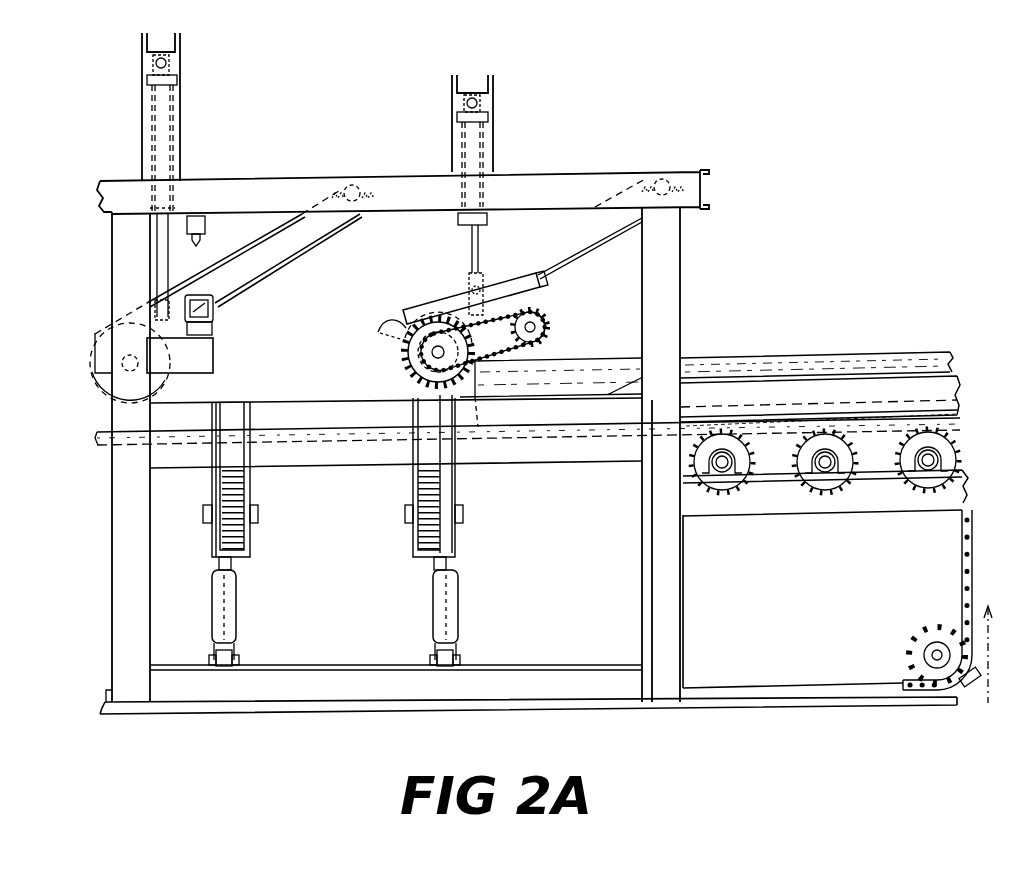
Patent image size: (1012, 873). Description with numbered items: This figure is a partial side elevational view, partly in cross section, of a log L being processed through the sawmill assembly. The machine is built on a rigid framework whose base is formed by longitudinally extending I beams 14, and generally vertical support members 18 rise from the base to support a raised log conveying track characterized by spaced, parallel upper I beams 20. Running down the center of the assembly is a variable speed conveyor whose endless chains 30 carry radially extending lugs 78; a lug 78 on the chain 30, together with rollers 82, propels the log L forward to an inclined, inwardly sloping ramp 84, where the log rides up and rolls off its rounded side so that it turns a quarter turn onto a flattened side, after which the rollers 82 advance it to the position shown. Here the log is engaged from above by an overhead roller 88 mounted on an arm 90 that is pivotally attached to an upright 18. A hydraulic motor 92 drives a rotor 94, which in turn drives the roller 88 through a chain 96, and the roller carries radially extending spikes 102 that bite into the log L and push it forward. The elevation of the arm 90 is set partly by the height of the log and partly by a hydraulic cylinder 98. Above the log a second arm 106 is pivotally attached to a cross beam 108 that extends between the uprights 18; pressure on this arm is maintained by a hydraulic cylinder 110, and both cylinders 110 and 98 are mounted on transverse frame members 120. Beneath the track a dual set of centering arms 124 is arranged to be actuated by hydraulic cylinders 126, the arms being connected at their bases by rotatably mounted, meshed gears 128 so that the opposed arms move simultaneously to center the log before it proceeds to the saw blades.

The longitudinally extending I beam 14 is at (535, 680).
The vertical support member 18 is at (112, 570).
The upper I beam 20 is at (953, 397).
The chain 30 is at (966, 578).
The lug 78 is at (976, 688).
The roller 82 is at (913, 440).
The ramp 84 is at (752, 407).
The overhead roller 88 is at (412, 382).
The arm 90 is at (582, 233).
The hydraulic motor 92 is at (545, 288).
The rotor 94 is at (548, 329).
The chain 96 is at (530, 354).
The hydraulic cylinder 98 is at (482, 168).
The spike 102 is at (400, 334).
The arm 106 is at (275, 249).
The cross beam 108 is at (298, 190).
The hydraulic cylinder 110 is at (158, 155).
The transverse frame member 120 is at (182, 40).
The centering arm 124 is at (222, 448).
The hydraulic cylinder 126 is at (237, 628).
The gear 128 is at (235, 512).
The log L is at (856, 362).